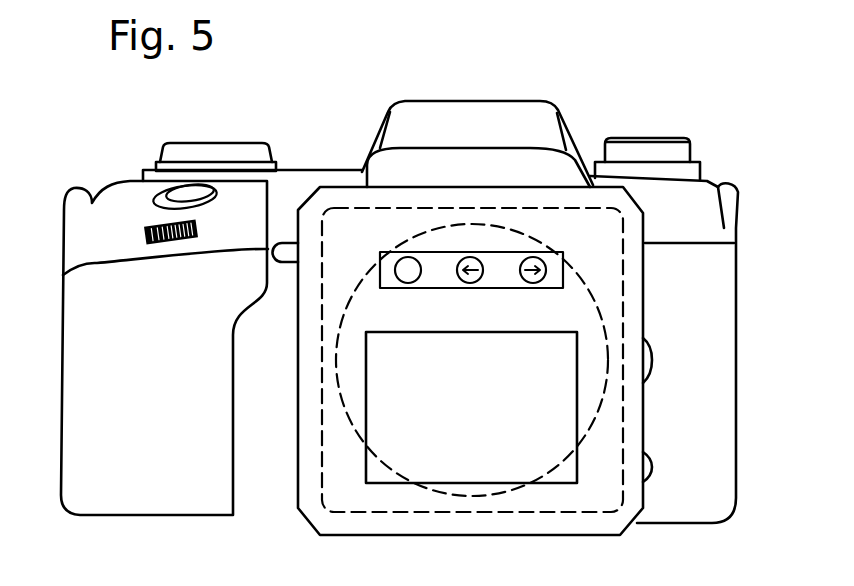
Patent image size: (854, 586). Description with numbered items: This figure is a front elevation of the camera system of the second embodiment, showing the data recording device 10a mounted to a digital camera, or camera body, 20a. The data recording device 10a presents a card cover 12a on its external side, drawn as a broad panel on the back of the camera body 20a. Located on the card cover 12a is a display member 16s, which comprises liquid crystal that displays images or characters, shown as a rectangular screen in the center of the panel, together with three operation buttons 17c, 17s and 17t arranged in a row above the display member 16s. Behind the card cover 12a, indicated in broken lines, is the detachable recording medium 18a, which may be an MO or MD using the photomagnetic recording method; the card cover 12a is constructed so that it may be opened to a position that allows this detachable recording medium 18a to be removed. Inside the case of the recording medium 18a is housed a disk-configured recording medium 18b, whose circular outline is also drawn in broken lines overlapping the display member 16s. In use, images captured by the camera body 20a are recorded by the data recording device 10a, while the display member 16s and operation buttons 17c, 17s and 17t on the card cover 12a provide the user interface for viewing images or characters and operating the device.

The data recording device 10a is at (598, 540).
The card cover 12a is at (633, 417).
The display member 16s is at (365, 417).
The operation button 17c is at (407, 264).
The operation button 17s is at (463, 281).
The operation button 17t is at (543, 281).
The detachable recording medium 18a is at (367, 512).
The disk-configured recording medium 18b is at (497, 497).
The digital camera 20a is at (597, 128).